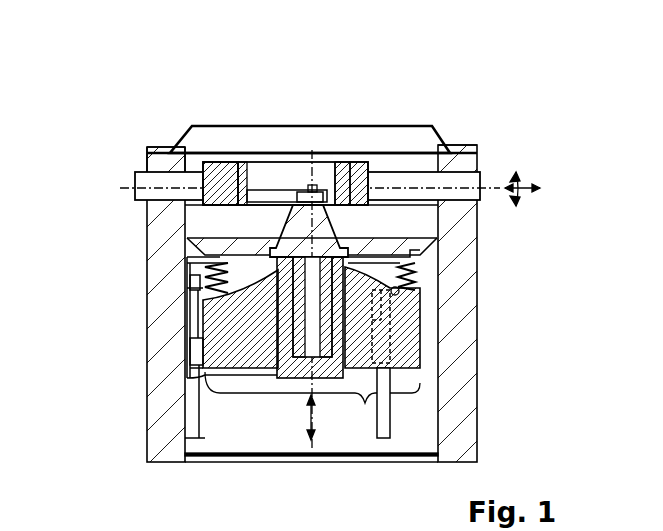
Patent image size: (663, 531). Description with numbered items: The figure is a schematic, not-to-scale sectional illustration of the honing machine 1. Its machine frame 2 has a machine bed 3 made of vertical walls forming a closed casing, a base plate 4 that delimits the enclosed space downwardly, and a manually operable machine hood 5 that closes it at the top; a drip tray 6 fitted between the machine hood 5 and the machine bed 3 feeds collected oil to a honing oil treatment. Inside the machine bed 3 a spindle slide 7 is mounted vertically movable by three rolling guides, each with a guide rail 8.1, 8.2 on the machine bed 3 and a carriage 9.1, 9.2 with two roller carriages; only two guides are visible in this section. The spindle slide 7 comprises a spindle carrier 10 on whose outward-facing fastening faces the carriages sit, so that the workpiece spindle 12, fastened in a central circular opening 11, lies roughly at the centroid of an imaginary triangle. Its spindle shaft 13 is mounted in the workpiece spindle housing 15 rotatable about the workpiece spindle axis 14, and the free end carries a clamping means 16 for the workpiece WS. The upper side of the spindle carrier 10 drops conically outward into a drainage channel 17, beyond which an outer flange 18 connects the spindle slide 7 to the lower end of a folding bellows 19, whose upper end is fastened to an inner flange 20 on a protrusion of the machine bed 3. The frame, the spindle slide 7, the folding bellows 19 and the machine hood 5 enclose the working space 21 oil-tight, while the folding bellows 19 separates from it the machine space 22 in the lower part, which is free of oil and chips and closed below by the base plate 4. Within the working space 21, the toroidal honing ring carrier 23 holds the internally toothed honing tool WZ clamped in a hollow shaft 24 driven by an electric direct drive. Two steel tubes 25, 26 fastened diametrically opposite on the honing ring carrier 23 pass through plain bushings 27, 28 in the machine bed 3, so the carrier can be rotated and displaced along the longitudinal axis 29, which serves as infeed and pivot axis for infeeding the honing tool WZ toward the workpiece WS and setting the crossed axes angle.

The honing machine 1 is at (100, 107).
The machine frame 2 is at (470, 470).
The machine bed 3 is at (147, 243).
The base plate 4 is at (245, 450).
The machine hood 5 is at (440, 128).
The drip tray 6 is at (155, 153).
The spindle slide 7 is at (312, 342).
The guide rail 8.1 is at (392, 412).
The guide rail 8.2 is at (199, 420).
The carriage 9.1 is at (383, 352).
The carriage 9.2 is at (188, 355).
The spindle carrier 10 is at (200, 373).
The central circular opening 11 is at (207, 297).
The workpiece spindle 12 is at (293, 383).
The spindle shaft 13 is at (327, 330).
The workpiece spindle axis 14 is at (398, 288).
The workpiece spindle housing 15 is at (200, 383).
The clamping means 16 is at (440, 215).
The drainage channel 17 is at (172, 303).
The outer flange 18 is at (198, 288).
The folding bellows 19 is at (210, 270).
The inner flange 20 is at (437, 250).
The working space 21 is at (197, 232).
The machine space 22 is at (205, 438).
The honing ring carrier 23 is at (222, 172).
The hollow shaft 24 is at (343, 172).
The steel tube 25 is at (170, 153).
The steel tube 26 is at (418, 170).
The plain bushing 27 is at (148, 162).
The plain bushing 28 is at (460, 172).
The longitudinal axis 29 is at (125, 188).
The honing tool WZ is at (245, 175).
The workpiece WS is at (306, 176).